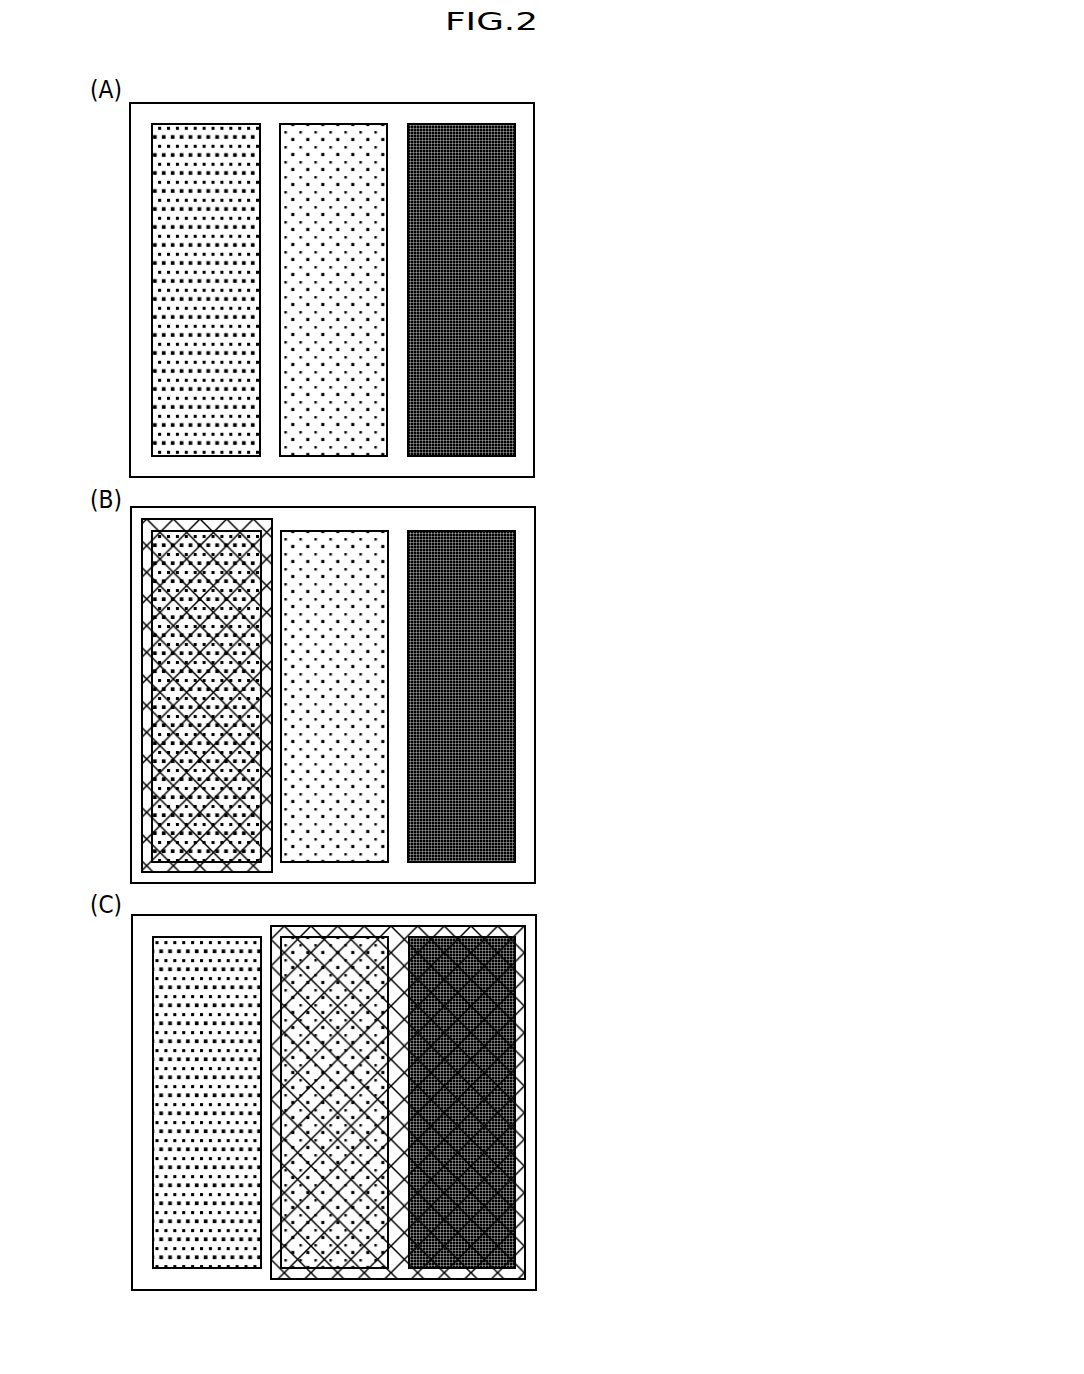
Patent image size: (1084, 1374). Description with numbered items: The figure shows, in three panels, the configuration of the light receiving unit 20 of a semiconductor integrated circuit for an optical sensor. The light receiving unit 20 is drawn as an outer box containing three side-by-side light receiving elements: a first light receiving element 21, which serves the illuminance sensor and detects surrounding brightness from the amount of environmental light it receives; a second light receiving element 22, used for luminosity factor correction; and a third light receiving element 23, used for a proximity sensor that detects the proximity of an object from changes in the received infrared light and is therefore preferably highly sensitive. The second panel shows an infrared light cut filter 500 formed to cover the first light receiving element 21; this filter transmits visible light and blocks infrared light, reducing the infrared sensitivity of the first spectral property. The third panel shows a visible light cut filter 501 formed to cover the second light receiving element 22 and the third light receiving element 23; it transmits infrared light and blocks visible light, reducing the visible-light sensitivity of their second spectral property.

The light receiving unit 20 is at (512, 100).
The first light receiving element 21 is at (237, 200).
The second light receiving element 22 is at (365, 276).
The third light receiving element 23 is at (493, 385).
The infrared light cut filter 500 is at (265, 572).
The visible light cut filter 501 is at (520, 963).